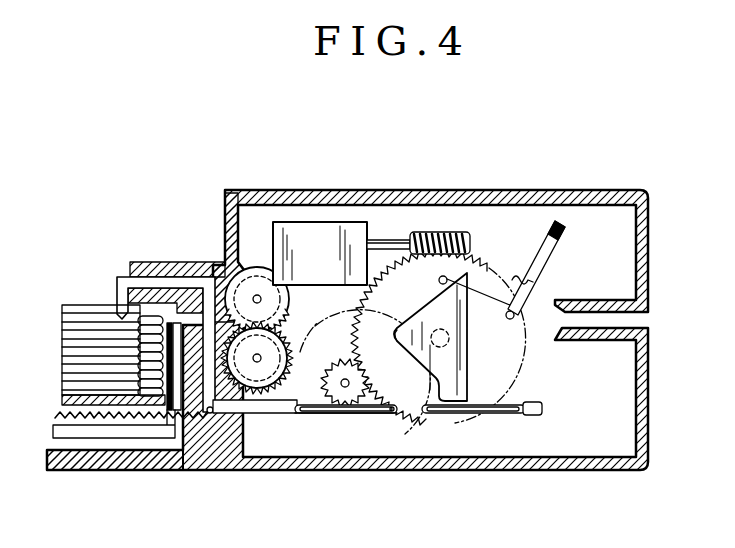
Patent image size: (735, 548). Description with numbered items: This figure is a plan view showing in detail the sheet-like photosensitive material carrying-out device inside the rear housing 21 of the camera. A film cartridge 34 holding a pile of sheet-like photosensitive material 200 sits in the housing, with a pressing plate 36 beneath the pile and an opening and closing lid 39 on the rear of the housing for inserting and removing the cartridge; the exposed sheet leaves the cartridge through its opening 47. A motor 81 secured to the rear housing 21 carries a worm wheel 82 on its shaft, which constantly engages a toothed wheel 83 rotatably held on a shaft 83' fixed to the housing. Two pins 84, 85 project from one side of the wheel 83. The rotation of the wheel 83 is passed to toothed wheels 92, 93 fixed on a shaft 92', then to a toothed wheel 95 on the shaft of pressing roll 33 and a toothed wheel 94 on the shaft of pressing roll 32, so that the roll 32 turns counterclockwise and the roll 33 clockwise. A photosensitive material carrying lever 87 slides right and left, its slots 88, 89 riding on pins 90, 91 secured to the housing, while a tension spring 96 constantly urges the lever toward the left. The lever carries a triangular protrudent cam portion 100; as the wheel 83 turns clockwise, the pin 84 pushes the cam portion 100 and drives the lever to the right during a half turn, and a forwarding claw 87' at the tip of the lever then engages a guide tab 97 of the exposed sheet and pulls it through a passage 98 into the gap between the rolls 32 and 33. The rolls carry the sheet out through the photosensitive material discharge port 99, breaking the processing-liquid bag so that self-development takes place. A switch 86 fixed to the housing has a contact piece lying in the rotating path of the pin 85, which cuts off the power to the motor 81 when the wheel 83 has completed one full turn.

The rear housing 21 is at (643, 410).
The pressing roll 32 is at (236, 268).
The pressing roll 33 is at (254, 372).
The film cartridge 34 is at (143, 432).
The pressing plate 36 is at (110, 400).
The opening and closing lid 39 is at (73, 460).
The opening 47 is at (172, 317).
The motor 81 is at (319, 235).
The worm wheel 82 is at (432, 237).
The toothed wheel 83 is at (457, 320).
The shaft 83' is at (470, 348).
The pin 84 is at (447, 277).
The pin 85 is at (517, 308).
The switch 86 is at (563, 220).
The photosensitive material carrying lever 87 is at (382, 430).
The forwarding claw 87' is at (145, 330).
The slot 88 is at (367, 410).
The slot 89 is at (498, 412).
The pin 90 is at (402, 412).
The pin 91 is at (528, 413).
The toothed wheel 92 is at (429, 337).
The shaft 92' is at (345, 404).
The toothed wheel 93 is at (311, 367).
The toothed wheel 94 is at (245, 288).
The toothed wheel 95 is at (272, 383).
The tension spring 96 is at (160, 418).
The guide tab 97 is at (143, 335).
The passage 98 is at (200, 316).
The photosensitive material discharge port 99 is at (633, 318).
The cam portion 100 is at (417, 333).
The sheet-like photosensitive material 200 is at (80, 345).